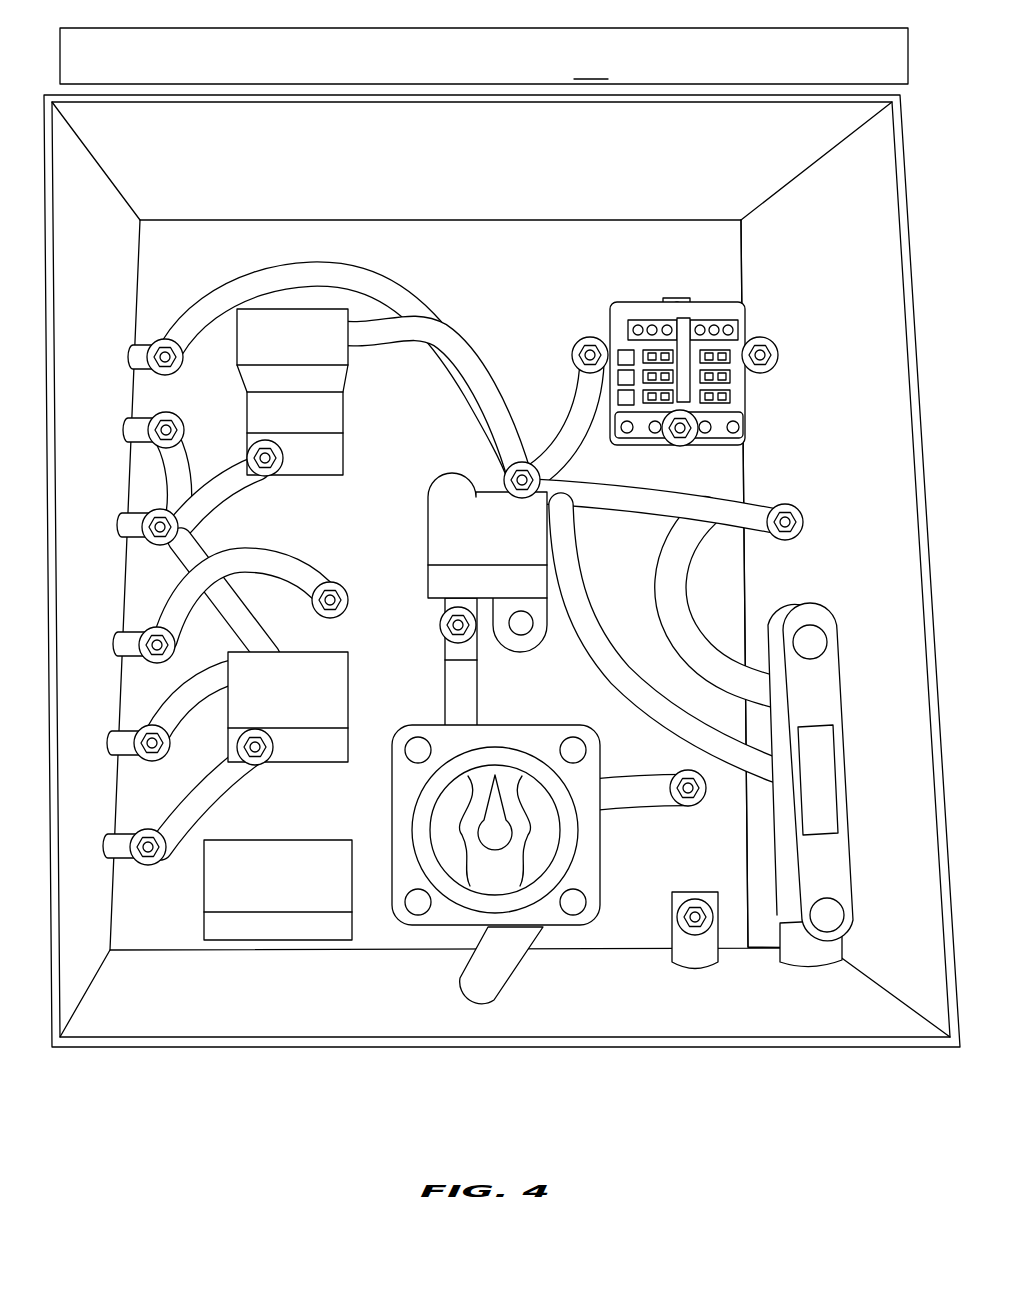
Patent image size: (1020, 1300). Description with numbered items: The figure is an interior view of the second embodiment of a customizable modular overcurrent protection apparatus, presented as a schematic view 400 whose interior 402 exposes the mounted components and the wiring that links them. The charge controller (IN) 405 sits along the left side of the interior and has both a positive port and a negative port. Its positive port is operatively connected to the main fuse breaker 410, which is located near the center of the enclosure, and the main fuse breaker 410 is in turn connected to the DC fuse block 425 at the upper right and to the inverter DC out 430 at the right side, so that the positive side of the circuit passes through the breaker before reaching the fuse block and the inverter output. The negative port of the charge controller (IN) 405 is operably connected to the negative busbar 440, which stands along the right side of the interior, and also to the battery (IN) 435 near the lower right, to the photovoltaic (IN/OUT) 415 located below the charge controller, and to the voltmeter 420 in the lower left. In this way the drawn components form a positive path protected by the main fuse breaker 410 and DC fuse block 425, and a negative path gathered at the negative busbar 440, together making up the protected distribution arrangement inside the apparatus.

The schematic view 400 is at (572, 28).
The interior 402 is at (486, 186).
The charge controller (IN) 405 is at (413, 453).
The main fuse breaker 410 is at (368, 564).
The photovoltaic (IN/OUT) 415 is at (372, 713).
The voltmeter 420 is at (292, 836).
The DC fuse block 425 is at (799, 418).
The inverter DC out 430 is at (819, 548).
The battery (IN) 435 is at (679, 880).
The negative busbar 440 is at (868, 757).